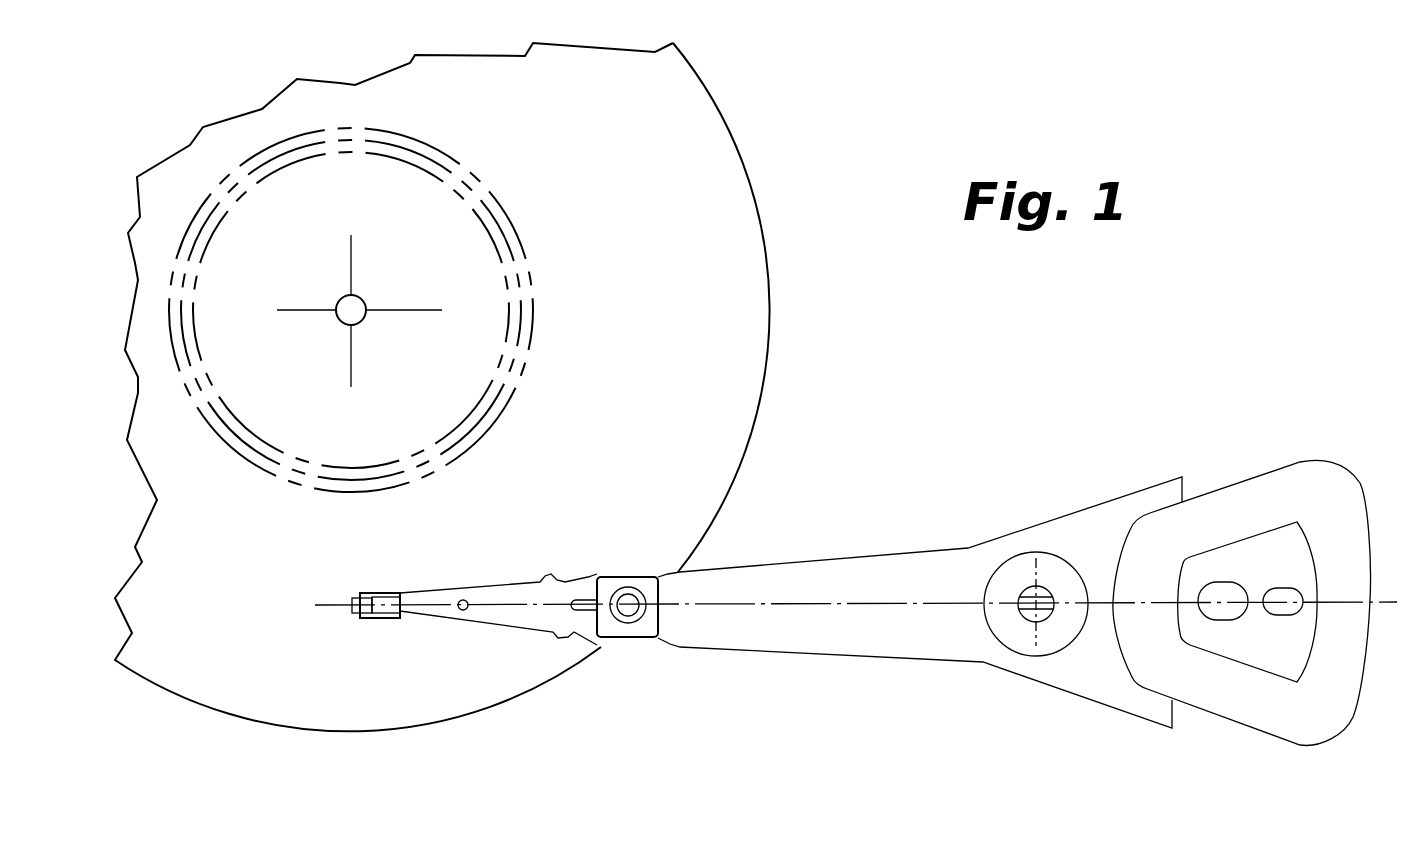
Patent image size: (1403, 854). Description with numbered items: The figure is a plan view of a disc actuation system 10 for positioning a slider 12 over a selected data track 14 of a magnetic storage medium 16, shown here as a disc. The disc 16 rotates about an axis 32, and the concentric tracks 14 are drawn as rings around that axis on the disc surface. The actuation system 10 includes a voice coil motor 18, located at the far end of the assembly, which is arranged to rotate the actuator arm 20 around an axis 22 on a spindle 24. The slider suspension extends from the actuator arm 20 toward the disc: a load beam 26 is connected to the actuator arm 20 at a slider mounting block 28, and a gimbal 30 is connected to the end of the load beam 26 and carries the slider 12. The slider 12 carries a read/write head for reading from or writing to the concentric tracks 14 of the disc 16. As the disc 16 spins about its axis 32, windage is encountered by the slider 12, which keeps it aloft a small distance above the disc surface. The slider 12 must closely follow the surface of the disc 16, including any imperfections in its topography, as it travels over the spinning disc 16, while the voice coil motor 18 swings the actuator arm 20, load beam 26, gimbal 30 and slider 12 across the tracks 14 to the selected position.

The disc actuation system 10 is at (958, 436).
The slider 12 is at (350, 604).
The data track 14 is at (302, 472).
The magnetic storage medium 16 is at (767, 387).
The voice coil motor 18 is at (1333, 462).
The actuator arm 20 is at (823, 560).
The axis 22 is at (1030, 617).
The spindle 24 is at (1050, 587).
The load beam 26 is at (466, 600).
The slider mounting block 28 is at (628, 577).
The gimbal 30 is at (373, 592).
The axis 32 is at (363, 299).